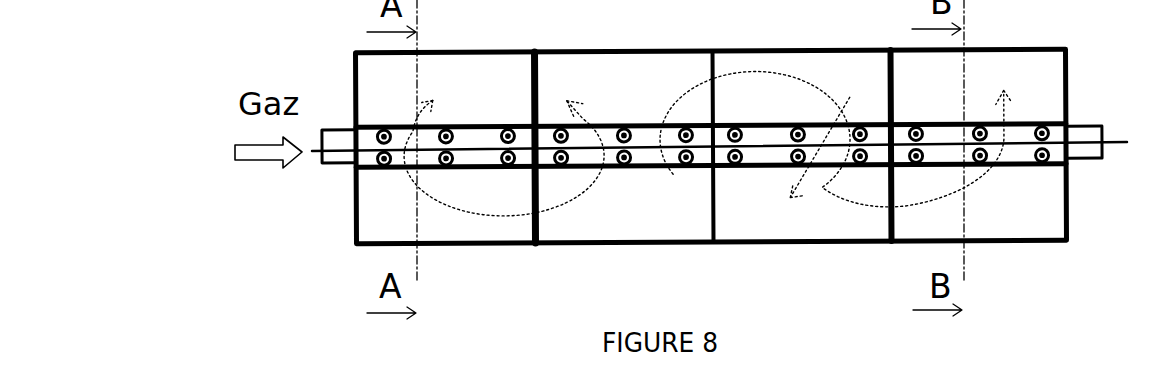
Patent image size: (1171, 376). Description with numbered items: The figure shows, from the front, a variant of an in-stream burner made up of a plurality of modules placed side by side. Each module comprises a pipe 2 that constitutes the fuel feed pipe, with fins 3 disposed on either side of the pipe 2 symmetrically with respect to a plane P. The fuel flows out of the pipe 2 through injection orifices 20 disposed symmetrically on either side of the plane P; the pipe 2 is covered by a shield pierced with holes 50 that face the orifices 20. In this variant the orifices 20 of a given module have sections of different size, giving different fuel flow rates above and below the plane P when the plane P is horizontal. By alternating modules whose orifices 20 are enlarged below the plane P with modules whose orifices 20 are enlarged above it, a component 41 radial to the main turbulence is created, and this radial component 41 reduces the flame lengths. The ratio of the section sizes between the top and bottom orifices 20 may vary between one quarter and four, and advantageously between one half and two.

The pipe 2 is at (343, 155).
The fins 3 is at (1057, 68).
The injection orifices 20 is at (1050, 158).
The radial component 41 is at (505, 222).
The holes 50 is at (1052, 128).
The plane P is at (1127, 142).